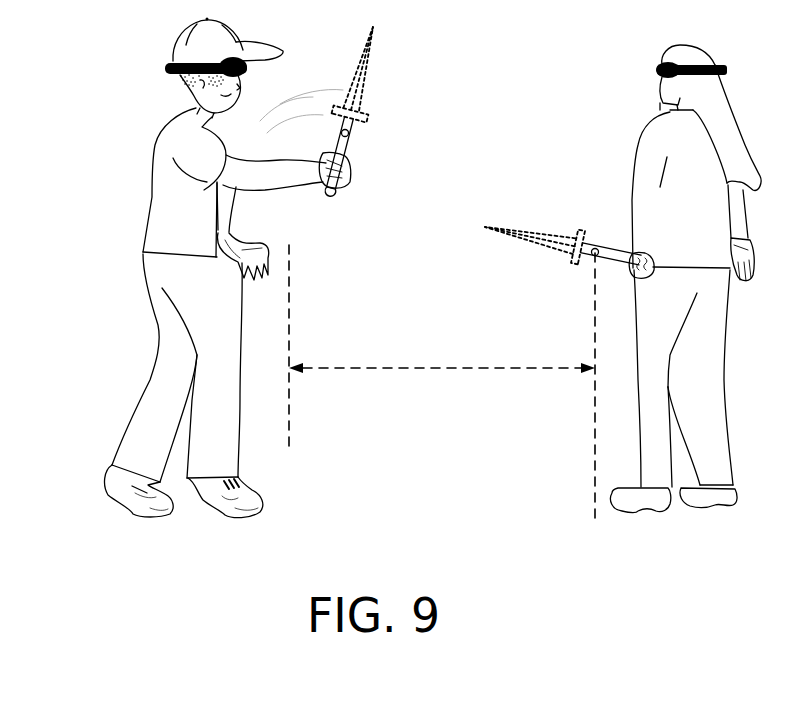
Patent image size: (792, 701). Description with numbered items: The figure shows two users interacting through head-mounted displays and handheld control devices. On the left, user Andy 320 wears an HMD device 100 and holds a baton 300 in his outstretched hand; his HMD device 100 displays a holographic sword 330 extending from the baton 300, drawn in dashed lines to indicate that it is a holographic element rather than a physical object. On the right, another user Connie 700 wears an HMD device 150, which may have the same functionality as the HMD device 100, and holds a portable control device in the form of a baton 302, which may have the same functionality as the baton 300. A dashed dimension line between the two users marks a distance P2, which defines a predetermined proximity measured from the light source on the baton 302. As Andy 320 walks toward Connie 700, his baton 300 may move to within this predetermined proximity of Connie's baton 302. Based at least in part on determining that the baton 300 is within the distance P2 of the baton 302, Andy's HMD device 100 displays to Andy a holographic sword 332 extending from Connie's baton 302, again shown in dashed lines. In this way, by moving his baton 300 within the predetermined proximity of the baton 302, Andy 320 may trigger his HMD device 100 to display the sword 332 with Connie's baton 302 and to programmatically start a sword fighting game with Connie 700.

The HMD device 100 is at (248, 73).
The user Andy 320 is at (143, 236).
The baton 300 is at (347, 153).
The holographic sword 330 is at (376, 45).
The HMD device 150 is at (657, 70).
The user Connie 700 is at (636, 153).
The baton 302 is at (621, 250).
The holographic sword 332 is at (505, 224).
The distance P2 is at (503, 369).